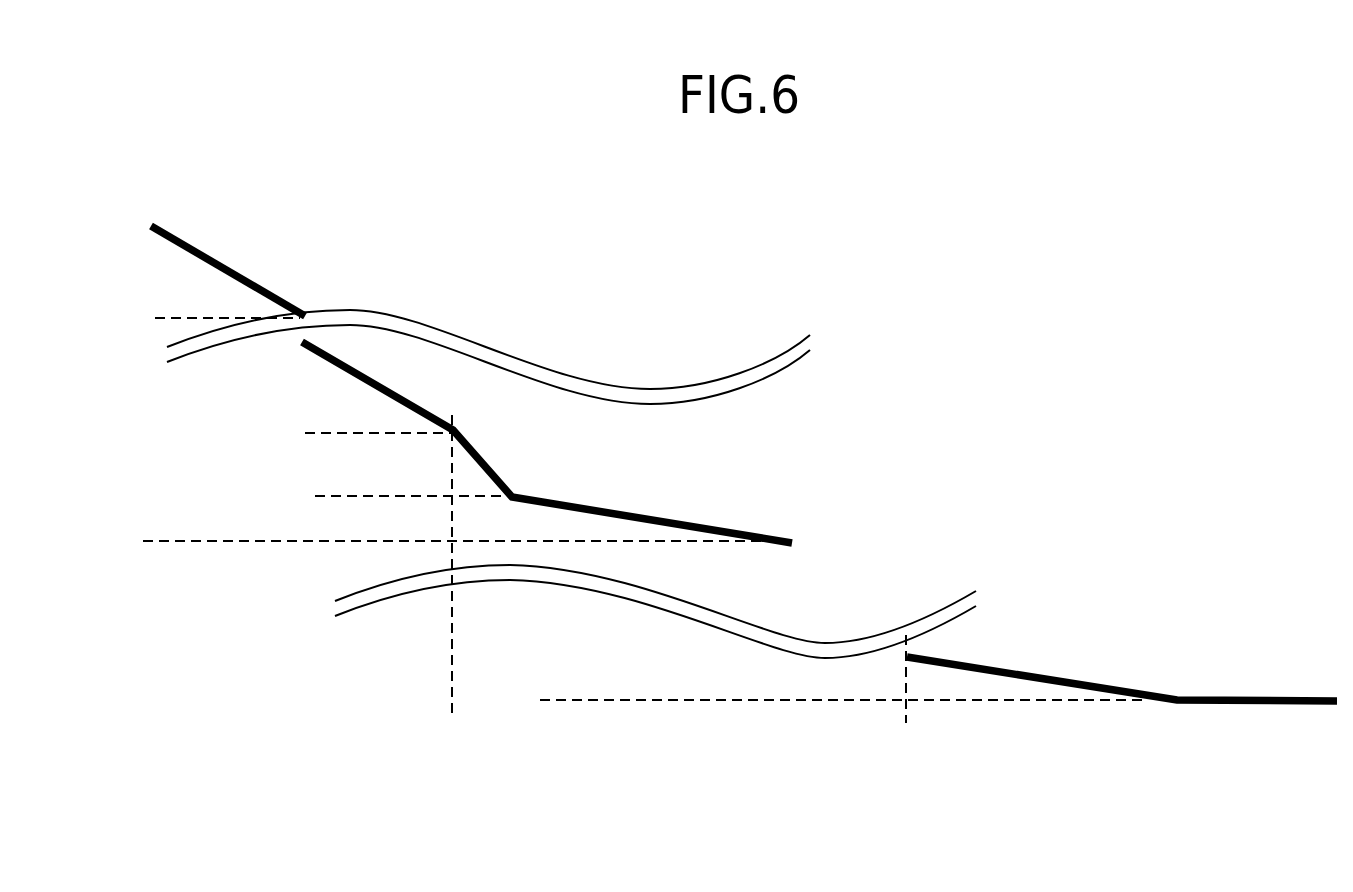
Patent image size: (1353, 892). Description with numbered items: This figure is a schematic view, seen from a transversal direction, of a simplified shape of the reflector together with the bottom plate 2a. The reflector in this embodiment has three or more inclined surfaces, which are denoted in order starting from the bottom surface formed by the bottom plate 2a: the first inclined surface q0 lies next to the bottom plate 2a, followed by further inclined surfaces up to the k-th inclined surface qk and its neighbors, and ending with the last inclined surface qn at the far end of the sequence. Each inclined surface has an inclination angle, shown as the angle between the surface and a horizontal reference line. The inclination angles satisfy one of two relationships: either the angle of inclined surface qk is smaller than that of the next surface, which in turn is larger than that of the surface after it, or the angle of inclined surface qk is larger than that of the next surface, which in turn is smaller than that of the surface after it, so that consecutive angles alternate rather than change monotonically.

The bottom plate 2a is at (1122, 693).
The inclined surface q0 is at (1122, 659).
The inclined surface qk is at (547, 437).
The inclined surface qn is at (237, 265).